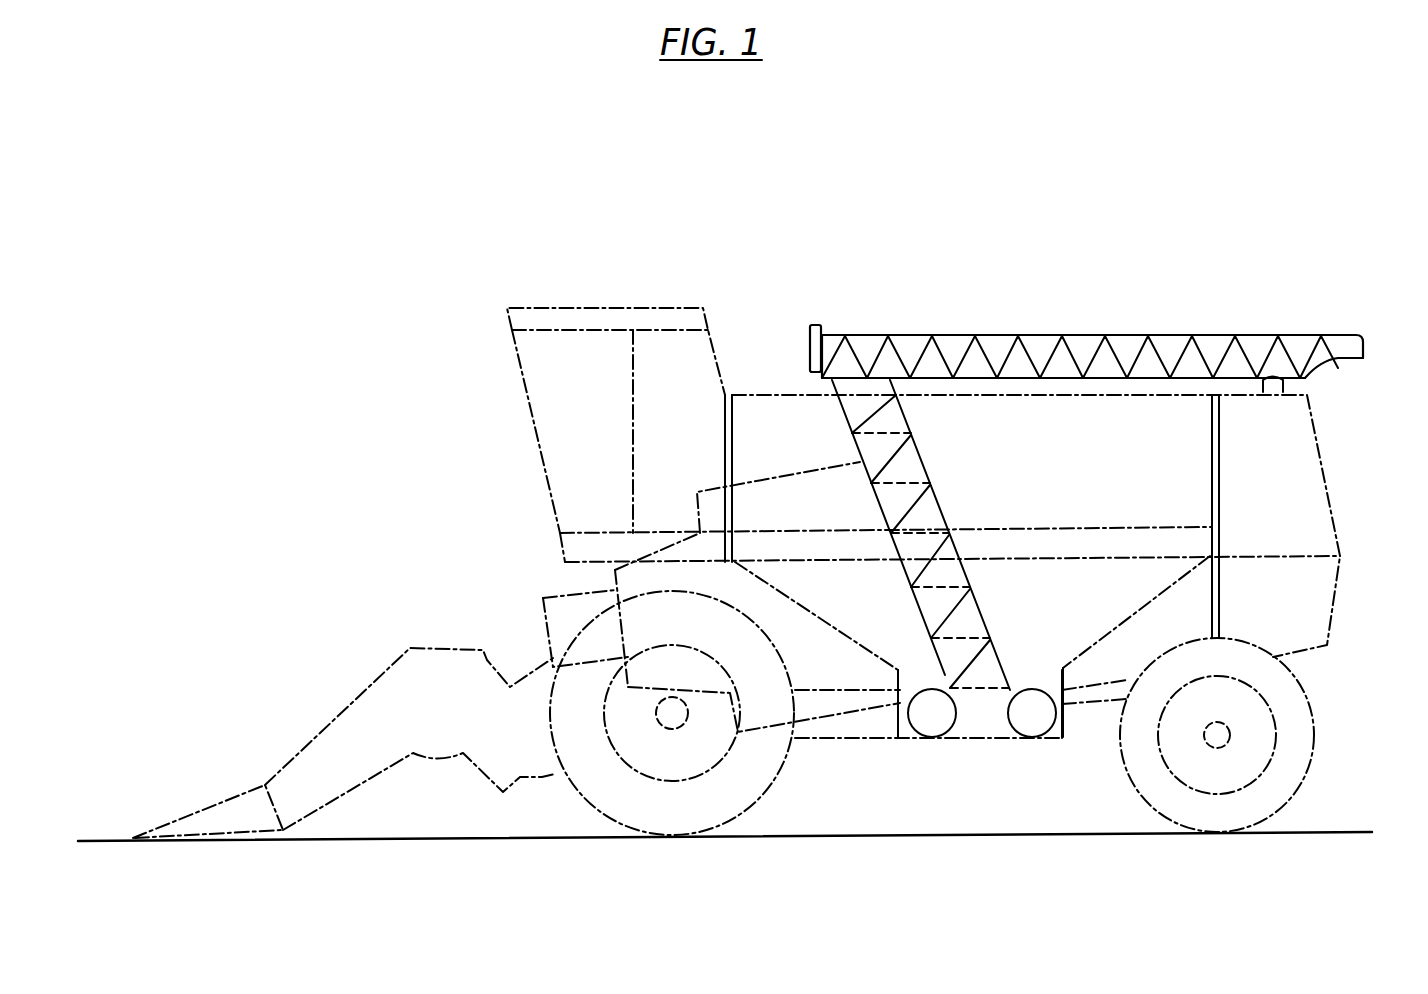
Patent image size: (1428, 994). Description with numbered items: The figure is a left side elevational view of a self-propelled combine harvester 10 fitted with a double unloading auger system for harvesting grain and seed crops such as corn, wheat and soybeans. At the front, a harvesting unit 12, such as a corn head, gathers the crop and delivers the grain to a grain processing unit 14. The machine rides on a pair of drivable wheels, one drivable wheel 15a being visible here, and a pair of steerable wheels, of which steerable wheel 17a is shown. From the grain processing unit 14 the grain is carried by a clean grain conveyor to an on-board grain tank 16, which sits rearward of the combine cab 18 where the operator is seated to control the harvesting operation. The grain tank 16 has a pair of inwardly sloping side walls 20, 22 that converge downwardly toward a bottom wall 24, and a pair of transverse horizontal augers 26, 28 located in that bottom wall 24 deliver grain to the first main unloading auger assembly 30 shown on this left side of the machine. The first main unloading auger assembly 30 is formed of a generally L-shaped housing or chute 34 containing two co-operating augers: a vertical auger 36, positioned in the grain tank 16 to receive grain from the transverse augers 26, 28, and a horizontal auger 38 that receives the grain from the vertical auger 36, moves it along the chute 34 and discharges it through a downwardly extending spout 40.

The combine harvester 10 is at (412, 308).
The harvesting unit 12 is at (347, 710).
The grain processing unit 14 is at (625, 632).
The drivable wheel 15a is at (738, 817).
The grain tank 16 is at (1150, 392).
The steerable wheel 17a is at (1273, 810).
The combine cab 18 is at (520, 367).
The inwardly sloping side wall 20 is at (832, 628).
The inwardly sloping side wall 22 is at (1128, 625).
The bottom wall 24 is at (993, 738).
The transverse auger 26 is at (927, 727).
The transverse auger 28 is at (1027, 727).
The first main unloading auger assembly 30 is at (797, 290).
The L-shaped housing or chute 34 is at (920, 452).
The vertical auger 36 is at (920, 510).
The horizontal auger 38 is at (1033, 347).
The spout 40 is at (1347, 362).